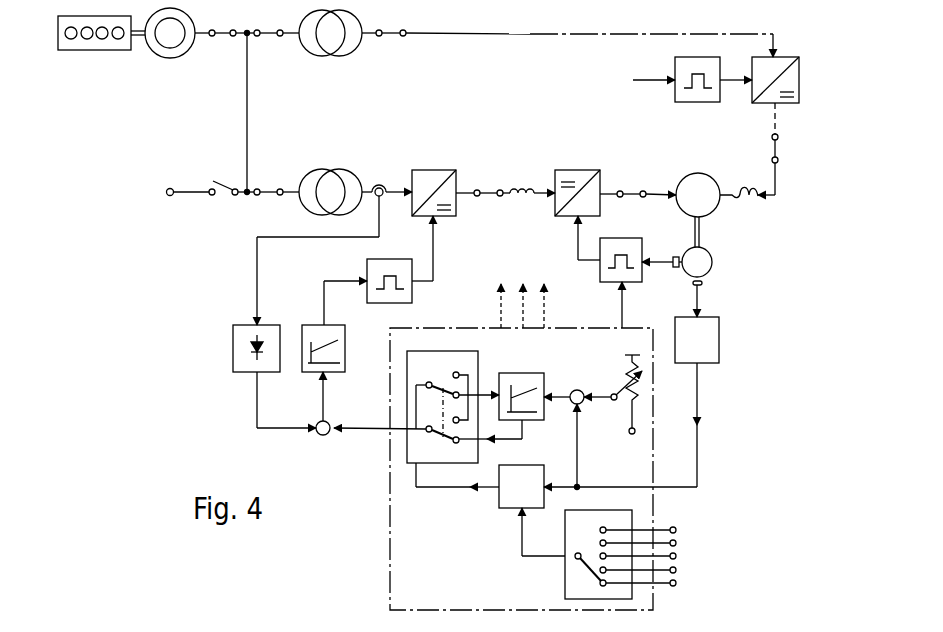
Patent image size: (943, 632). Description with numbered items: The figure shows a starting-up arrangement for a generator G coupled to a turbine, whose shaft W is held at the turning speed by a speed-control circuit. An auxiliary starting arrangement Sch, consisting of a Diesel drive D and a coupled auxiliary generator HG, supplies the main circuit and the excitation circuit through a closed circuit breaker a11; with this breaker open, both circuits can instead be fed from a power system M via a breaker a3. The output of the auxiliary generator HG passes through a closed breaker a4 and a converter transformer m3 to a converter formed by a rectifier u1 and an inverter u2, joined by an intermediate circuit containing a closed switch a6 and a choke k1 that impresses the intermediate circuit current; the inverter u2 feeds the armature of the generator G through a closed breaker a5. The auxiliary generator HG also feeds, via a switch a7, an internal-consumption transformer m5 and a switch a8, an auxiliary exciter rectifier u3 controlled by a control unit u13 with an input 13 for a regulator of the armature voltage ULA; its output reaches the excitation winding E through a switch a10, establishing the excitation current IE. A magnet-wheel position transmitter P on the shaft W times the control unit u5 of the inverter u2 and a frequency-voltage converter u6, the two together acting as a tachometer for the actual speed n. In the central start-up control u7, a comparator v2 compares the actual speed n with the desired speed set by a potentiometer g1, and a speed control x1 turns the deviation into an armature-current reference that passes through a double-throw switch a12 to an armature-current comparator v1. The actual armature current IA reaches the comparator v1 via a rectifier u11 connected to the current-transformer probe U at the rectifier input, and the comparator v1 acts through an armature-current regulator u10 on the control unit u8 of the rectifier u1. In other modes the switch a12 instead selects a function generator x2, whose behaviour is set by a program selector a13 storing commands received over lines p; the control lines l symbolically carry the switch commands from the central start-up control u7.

The Diesel drive D is at (85, 50).
The auxiliary starting arrangement Sch is at (151, 77).
The auxiliary generator HG is at (174, 56).
The circuit breaker a11 is at (221, 37).
The switch a7 is at (268, 37).
The internal-consumption transformer m5 is at (313, 58).
The switch a8 is at (391, 37).
The input 13 is at (643, 80).
The control unit u13 is at (688, 102).
The auxiliary exciter rectifier u3 is at (752, 66).
The switch a10 is at (794, 148).
The excitation winding E is at (731, 192).
The excitation current IE is at (767, 217).
The generator G is at (698, 195).
The armature voltage ULA is at (660, 194).
The power system M is at (170, 205).
The breaker a3 is at (231, 185).
The breaker a4 is at (270, 187).
The converter transformer m3 is at (341, 168).
The probe U is at (374, 186).
The rectifier u1 is at (418, 169).
The switch a6 is at (490, 188).
The choke k1 is at (510, 185).
The inverter u2 is at (594, 168).
The breaker a5 is at (631, 198).
The control unit u5 is at (640, 238).
The magnet-wheel position transmitter P is at (685, 282).
The shaft W is at (709, 232).
The frequency-voltage converter u6 is at (719, 340).
The control unit u8 is at (412, 301).
The armature-current regulator u10 is at (345, 355).
The rectifier u11 is at (233, 353).
The armature-current comparator v1 is at (327, 441).
The armature current IA is at (291, 411).
The central start-up control u7 is at (390, 530).
The control lines l is at (522, 294).
The control signal q is at (622, 305).
The double-throw switch a12 is at (477, 368).
The speed control x1 is at (519, 374).
The comparator v2 is at (570, 426).
The actual speed n is at (562, 444).
The reference speed setting device g1 is at (627, 372).
The function generator x2 is at (499, 508).
The program selector a13 is at (565, 578).
The lines p is at (683, 556).